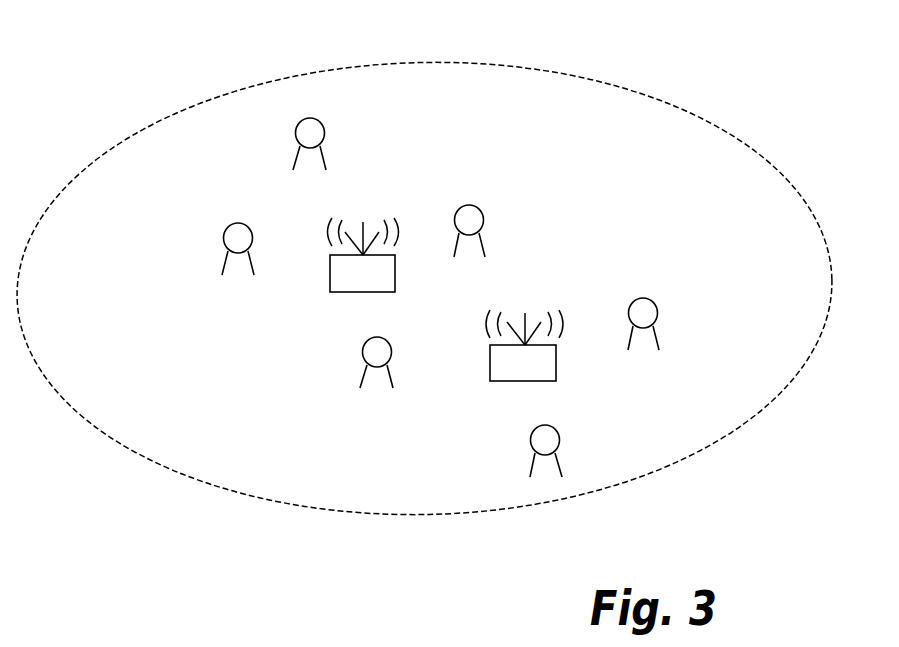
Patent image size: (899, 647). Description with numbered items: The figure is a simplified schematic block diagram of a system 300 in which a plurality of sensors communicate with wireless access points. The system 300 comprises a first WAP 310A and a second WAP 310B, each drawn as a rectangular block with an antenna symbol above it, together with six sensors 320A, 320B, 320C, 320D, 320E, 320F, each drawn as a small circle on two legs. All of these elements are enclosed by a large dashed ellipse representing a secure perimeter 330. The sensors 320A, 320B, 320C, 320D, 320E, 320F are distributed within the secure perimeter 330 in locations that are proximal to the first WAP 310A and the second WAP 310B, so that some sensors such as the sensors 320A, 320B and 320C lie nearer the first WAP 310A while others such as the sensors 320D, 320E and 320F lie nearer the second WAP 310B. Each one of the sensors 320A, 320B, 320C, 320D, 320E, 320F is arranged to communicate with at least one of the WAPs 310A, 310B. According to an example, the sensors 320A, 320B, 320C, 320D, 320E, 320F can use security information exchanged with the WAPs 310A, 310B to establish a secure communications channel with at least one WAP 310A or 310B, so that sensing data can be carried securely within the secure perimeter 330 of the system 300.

The system 300 is at (137, 77).
The secure perimeter 330 is at (248, 83).
The first WAP 310A is at (330, 272).
The second WAP 310B is at (518, 381).
The sensor 320A is at (298, 123).
The sensor 320B is at (237, 223).
The sensor 320C is at (469, 205).
The sensor 320D is at (386, 340).
The sensor 320E is at (560, 438).
The sensor 320F is at (640, 298).